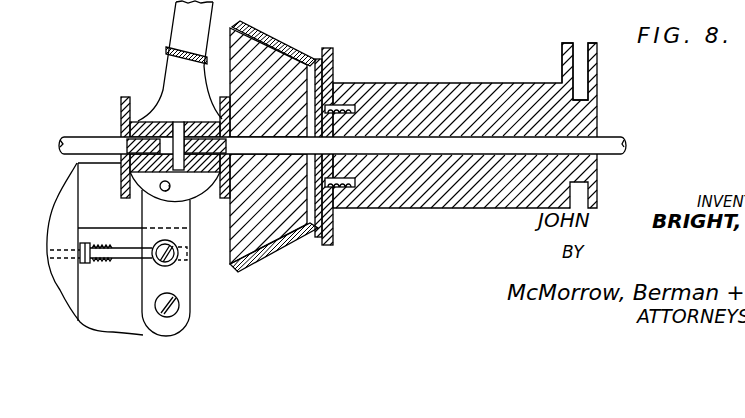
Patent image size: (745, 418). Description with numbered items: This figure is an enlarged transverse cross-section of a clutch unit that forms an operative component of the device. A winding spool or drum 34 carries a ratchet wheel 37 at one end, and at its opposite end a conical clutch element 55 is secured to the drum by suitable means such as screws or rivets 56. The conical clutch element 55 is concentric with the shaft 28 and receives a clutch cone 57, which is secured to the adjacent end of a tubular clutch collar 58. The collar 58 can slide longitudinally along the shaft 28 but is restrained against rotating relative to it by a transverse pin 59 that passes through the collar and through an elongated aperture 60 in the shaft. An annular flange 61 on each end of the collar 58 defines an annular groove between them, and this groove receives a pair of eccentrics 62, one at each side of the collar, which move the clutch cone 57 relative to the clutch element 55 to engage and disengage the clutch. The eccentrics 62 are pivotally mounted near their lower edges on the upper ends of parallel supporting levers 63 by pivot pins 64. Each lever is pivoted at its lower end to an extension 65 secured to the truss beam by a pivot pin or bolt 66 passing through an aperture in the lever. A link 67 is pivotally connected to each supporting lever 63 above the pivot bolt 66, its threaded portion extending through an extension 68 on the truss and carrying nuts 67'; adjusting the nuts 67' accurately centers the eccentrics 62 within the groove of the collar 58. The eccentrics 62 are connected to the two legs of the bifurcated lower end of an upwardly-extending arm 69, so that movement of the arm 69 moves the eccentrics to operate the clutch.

The shaft 28 is at (617, 134).
The winding spool or drum 34 is at (462, 83).
The ratchet wheel 37 is at (584, 58).
The conical clutch element 55 is at (300, 24).
The screws or rivets 56 is at (355, 104).
The clutch cone 57 is at (236, 236).
The tubular clutch collar 58 is at (130, 120).
The transverse pin 59 is at (177, 158).
The elongated aperture 60 is at (166, 137).
The annular flange 61 is at (121, 100).
The eccentrics 62 is at (148, 184).
The supporting levers 63 is at (150, 216).
The pivot pins 64 is at (166, 193).
The extension 65 is at (84, 320).
The pivot pin or bolt 66 is at (180, 308).
The link 67 is at (118, 266).
The nuts 67' is at (103, 248).
The extension 68 is at (58, 212).
The upwardly-extending arm 69 is at (178, 19).